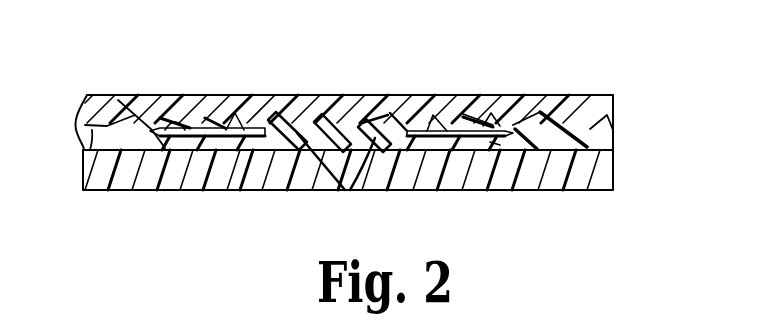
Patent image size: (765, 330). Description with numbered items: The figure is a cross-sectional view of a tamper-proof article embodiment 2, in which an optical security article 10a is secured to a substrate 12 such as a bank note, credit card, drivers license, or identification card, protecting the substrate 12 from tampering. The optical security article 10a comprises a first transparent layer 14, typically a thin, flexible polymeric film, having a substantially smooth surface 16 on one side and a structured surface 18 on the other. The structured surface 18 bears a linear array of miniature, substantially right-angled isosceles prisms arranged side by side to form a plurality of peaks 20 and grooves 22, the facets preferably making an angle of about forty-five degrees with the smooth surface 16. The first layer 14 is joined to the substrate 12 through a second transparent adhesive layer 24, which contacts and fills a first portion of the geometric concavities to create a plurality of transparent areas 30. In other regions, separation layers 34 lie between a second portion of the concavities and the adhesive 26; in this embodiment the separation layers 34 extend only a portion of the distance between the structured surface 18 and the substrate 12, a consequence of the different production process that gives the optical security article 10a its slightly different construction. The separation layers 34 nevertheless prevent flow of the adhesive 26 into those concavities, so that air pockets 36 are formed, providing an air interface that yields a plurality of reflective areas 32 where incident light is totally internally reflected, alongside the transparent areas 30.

The tamper-proof article embodiment 2 is at (606, 56).
The optical security article 10a is at (623, 92).
The substrate 12 is at (596, 180).
The first transparent layer 14 is at (116, 95).
The smooth surface 16 is at (286, 95).
The structured surface 18 is at (192, 115).
The peaks 20 is at (86, 153).
The grooves 22 is at (345, 118).
The second transparent adhesive layer 24 is at (137, 130).
The adhesive 26 is at (497, 142).
The transparent areas 30 is at (515, 90).
The reflective areas 32 is at (412, 90).
The separation layers 34 is at (345, 190).
The air pockets 36 is at (240, 112).